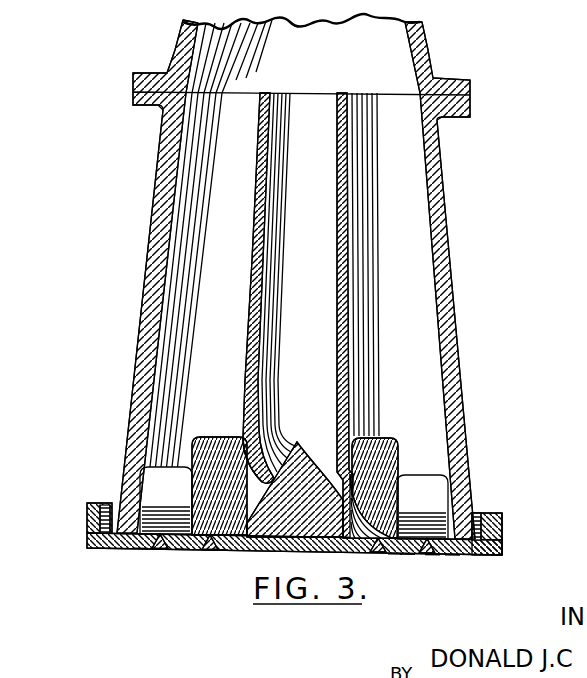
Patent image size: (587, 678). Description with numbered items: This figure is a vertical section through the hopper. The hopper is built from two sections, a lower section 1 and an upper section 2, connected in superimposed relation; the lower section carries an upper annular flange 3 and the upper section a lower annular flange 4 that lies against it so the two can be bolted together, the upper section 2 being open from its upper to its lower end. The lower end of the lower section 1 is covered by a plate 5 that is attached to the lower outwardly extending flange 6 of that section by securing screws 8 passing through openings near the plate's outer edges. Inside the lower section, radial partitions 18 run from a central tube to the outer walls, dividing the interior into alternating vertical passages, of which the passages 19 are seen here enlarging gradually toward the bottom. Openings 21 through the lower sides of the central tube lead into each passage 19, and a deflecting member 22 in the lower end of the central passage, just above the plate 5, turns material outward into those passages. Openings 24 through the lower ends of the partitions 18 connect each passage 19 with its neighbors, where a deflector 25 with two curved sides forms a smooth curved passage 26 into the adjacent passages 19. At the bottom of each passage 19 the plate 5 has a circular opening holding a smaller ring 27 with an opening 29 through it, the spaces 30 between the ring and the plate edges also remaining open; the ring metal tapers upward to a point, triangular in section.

The lower hopper section 1 is at (443, 230).
The upper hopper section 2 is at (428, 44).
The upper annular flange 3 is at (472, 110).
The lower annular flange 4 is at (452, 78).
The plate 5 is at (343, 552).
The lower outwardly extending flange 6 is at (502, 518).
The securing screws 8 is at (87, 522).
The radial partitions 18 is at (340, 298).
The vertical passages 19 is at (279, 243).
The openings 21 is at (213, 440).
The deflecting member 22 is at (212, 540).
The openings 24 is at (148, 472).
The deflector 25 is at (247, 546).
The curved passage 26 is at (265, 478).
The ring 27 is at (157, 548).
The ring opening 29 is at (182, 548).
The spaces 30 is at (140, 549).